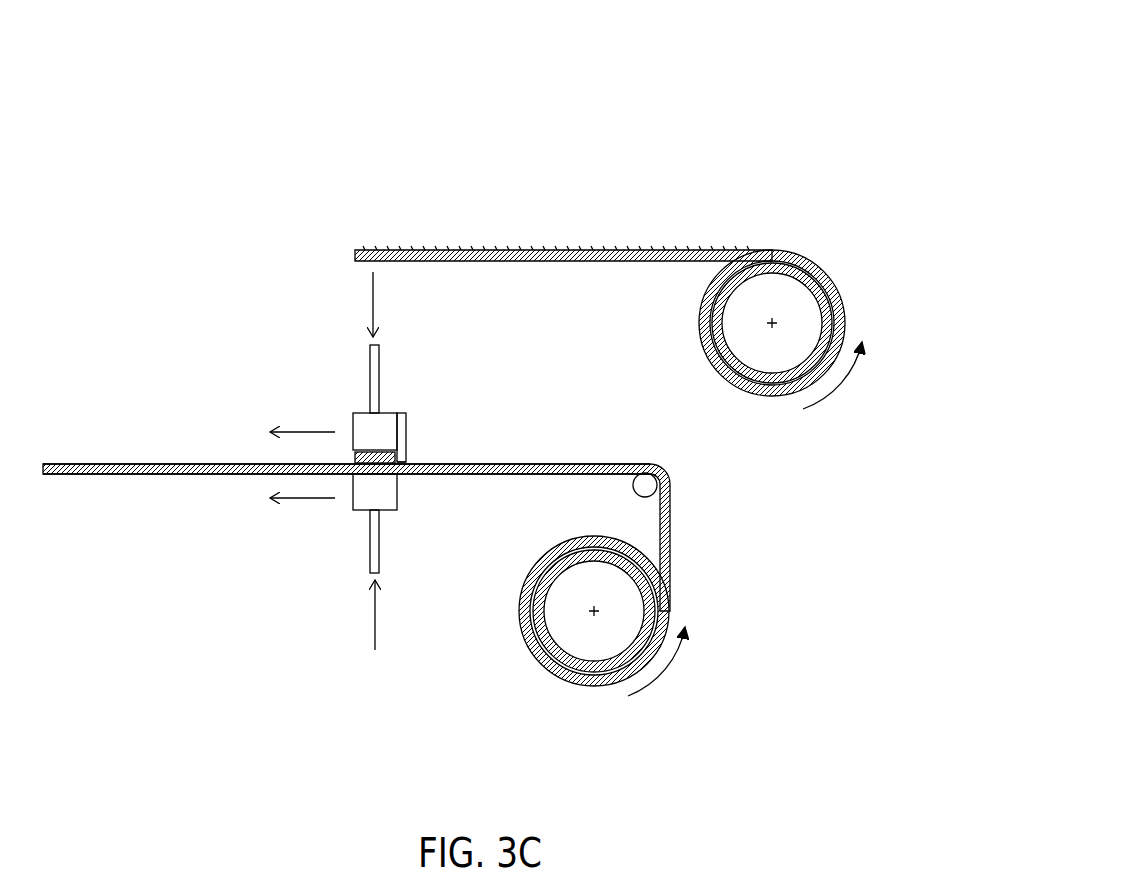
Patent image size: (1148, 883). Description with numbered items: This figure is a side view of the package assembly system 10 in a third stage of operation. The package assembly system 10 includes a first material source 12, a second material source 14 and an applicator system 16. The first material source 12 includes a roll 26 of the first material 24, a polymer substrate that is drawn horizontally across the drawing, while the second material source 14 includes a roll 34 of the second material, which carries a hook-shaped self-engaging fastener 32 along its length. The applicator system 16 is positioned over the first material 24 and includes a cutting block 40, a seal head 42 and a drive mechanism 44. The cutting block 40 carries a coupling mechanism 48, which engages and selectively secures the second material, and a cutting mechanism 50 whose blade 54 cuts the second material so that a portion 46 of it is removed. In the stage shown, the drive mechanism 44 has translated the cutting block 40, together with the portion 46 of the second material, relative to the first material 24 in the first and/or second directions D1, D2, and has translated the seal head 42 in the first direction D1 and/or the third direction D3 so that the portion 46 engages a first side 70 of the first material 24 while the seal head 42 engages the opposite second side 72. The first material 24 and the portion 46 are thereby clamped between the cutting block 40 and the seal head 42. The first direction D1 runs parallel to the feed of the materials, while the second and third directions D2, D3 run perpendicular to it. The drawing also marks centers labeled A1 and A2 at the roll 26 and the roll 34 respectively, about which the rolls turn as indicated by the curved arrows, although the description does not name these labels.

The package assembly system 10 is at (728, 98).
The first material source 12 is at (727, 547).
The second material source 14 is at (873, 237).
The applicator system 16 is at (453, 398).
The first material 24 is at (158, 468).
The roll 26 is at (570, 639).
The self-engaging fastener 32 is at (550, 246).
The roll 34 is at (813, 323).
The cutting block 40 is at (345, 410).
The seal head 42 is at (345, 515).
The drive mechanism 44 is at (382, 390).
The portion 46 is at (355, 458).
The coupling mechanism 48 is at (380, 430).
The cutting mechanism 50 is at (415, 440).
The blade 54 is at (406, 460).
The first side 70 is at (200, 463).
The second side 72 is at (192, 475).
The first roll axis A1 is at (594, 611).
The second roll axis A2 is at (772, 323).
The first direction D1 is at (297, 430).
The second direction D2 is at (373, 310).
The third direction D3 is at (375, 610).